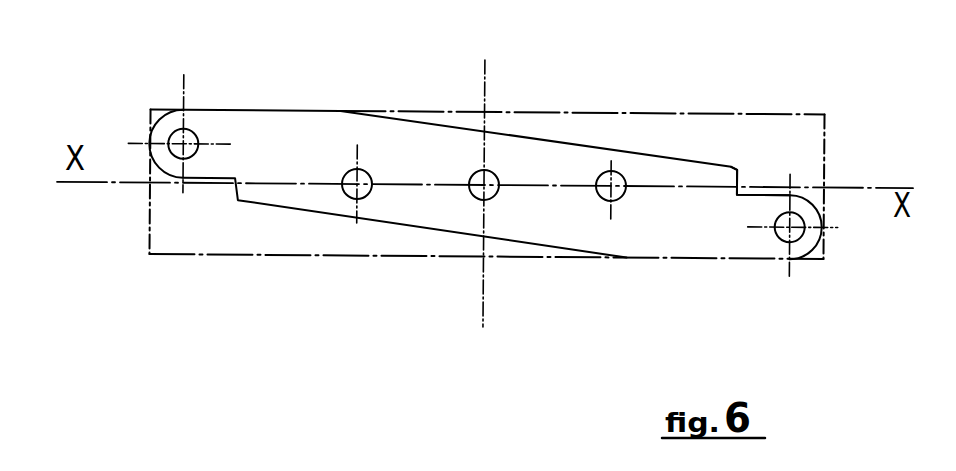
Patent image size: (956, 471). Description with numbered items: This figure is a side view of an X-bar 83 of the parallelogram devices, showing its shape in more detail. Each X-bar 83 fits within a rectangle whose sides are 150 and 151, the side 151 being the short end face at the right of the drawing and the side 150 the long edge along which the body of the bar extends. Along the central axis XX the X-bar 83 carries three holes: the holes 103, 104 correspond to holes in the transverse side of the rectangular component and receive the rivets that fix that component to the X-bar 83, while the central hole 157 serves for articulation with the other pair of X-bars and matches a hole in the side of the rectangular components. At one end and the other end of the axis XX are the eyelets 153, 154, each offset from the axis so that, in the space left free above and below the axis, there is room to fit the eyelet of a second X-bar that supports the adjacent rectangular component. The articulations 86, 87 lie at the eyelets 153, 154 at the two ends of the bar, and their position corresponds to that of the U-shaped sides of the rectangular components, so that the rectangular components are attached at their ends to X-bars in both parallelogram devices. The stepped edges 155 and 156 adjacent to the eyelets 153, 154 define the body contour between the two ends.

The X-bar 83 is at (552, 160).
The articulation 86 is at (185, 135).
The articulation 87 is at (800, 230).
The hole 103 is at (348, 190).
The hole 104 is at (615, 192).
The side of rectangle 150 is at (727, 113).
The side of rectangle 151 is at (824, 145).
The eyelet 153 is at (170, 130).
The eyelet 154 is at (795, 248).
The shoulder 155 is at (196, 180).
The step 156 is at (773, 195).
The hole 157 is at (480, 193).